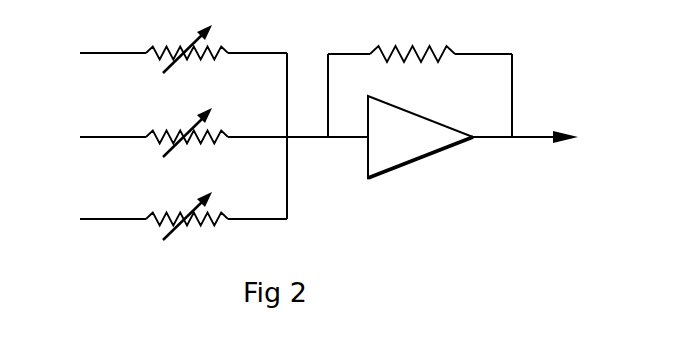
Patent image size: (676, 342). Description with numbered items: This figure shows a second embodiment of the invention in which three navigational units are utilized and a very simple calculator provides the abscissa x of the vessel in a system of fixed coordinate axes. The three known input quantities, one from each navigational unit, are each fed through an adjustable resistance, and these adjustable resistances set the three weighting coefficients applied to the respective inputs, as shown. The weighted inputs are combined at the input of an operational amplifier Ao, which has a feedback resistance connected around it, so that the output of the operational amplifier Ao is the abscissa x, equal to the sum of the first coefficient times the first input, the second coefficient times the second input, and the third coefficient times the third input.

The operational amplifier Ao is at (420, 112).
The abscissa x is at (525, 126).